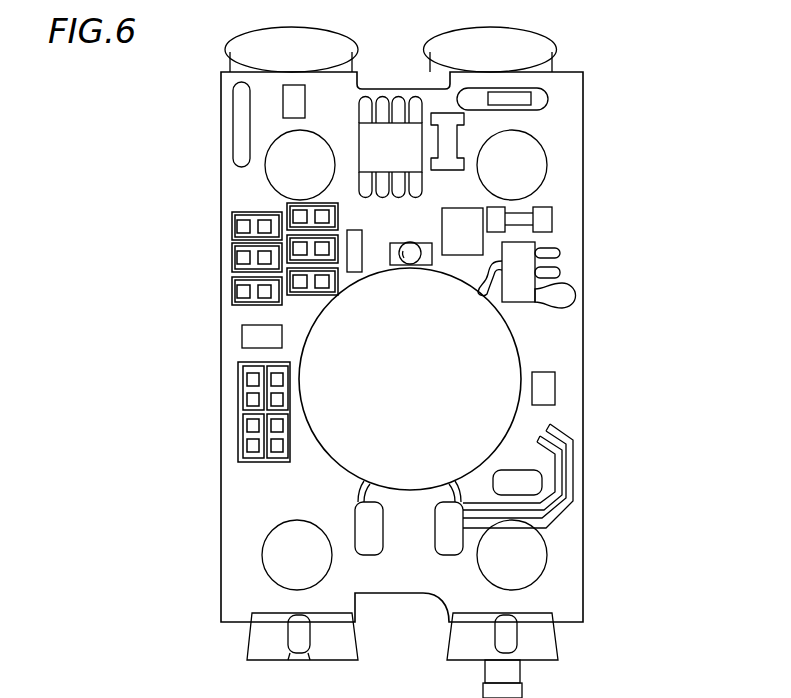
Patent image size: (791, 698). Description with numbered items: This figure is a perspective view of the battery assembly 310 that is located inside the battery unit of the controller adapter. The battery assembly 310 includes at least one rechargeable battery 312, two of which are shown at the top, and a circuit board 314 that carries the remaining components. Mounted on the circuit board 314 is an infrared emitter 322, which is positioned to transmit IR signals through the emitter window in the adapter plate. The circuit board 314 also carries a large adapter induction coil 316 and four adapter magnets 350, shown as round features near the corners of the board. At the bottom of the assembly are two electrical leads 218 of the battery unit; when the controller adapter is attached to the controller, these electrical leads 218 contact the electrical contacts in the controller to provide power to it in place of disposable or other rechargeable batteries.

The battery assembly 310 is at (168, 318).
The rechargeable battery 312 is at (333, 30).
The circuit board 314 is at (583, 387).
The adapter induction coil 316 is at (519, 346).
The infrared (IR) emitter 322 is at (398, 247).
The adapter magnets 350 is at (267, 150).
The electrical leads 218 is at (247, 660).